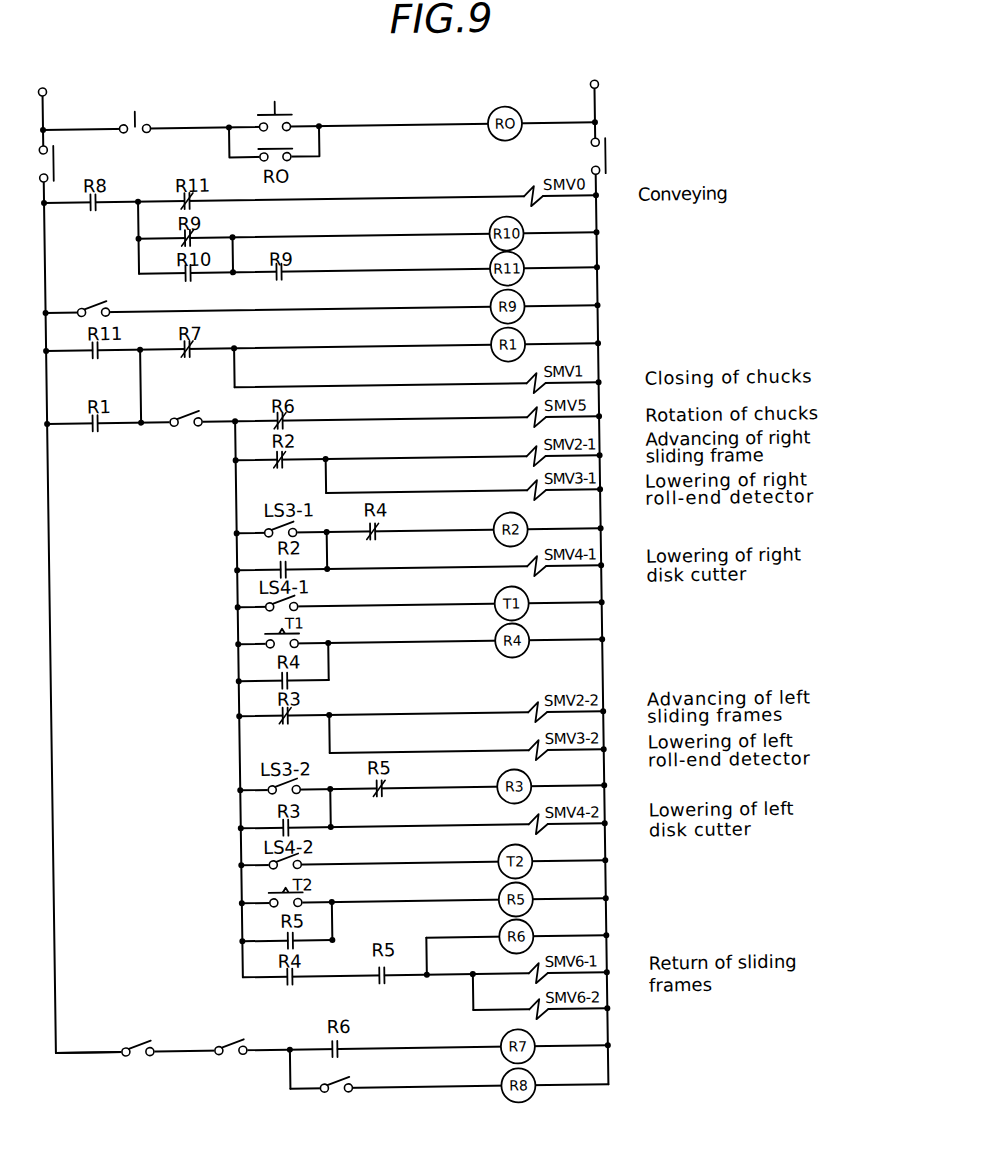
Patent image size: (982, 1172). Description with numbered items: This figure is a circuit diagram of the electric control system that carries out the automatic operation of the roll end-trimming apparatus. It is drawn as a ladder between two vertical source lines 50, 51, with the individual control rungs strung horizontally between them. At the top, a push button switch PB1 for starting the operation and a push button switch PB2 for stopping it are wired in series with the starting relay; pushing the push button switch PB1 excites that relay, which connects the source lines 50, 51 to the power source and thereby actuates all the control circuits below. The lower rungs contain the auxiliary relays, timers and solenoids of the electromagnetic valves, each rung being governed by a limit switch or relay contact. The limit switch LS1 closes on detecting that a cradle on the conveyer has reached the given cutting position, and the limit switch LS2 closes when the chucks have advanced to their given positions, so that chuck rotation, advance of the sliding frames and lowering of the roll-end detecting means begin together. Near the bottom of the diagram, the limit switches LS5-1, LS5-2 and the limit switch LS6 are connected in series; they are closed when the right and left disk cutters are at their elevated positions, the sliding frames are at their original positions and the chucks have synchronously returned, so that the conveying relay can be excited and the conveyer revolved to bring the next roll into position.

The source line 50 is at (50, 659).
The source line 51 is at (597, 265).
The push button switch for starting PB1 is at (275, 104).
The push button switch for stopping PB2 is at (133, 109).
The limit switch LS1 is at (92, 298).
The limit switch LS2 is at (187, 410).
The limit switch LS5-1 is at (146, 1036).
The limit switch LS5-2 is at (238, 1035).
The limit switch LS6 is at (333, 1075).